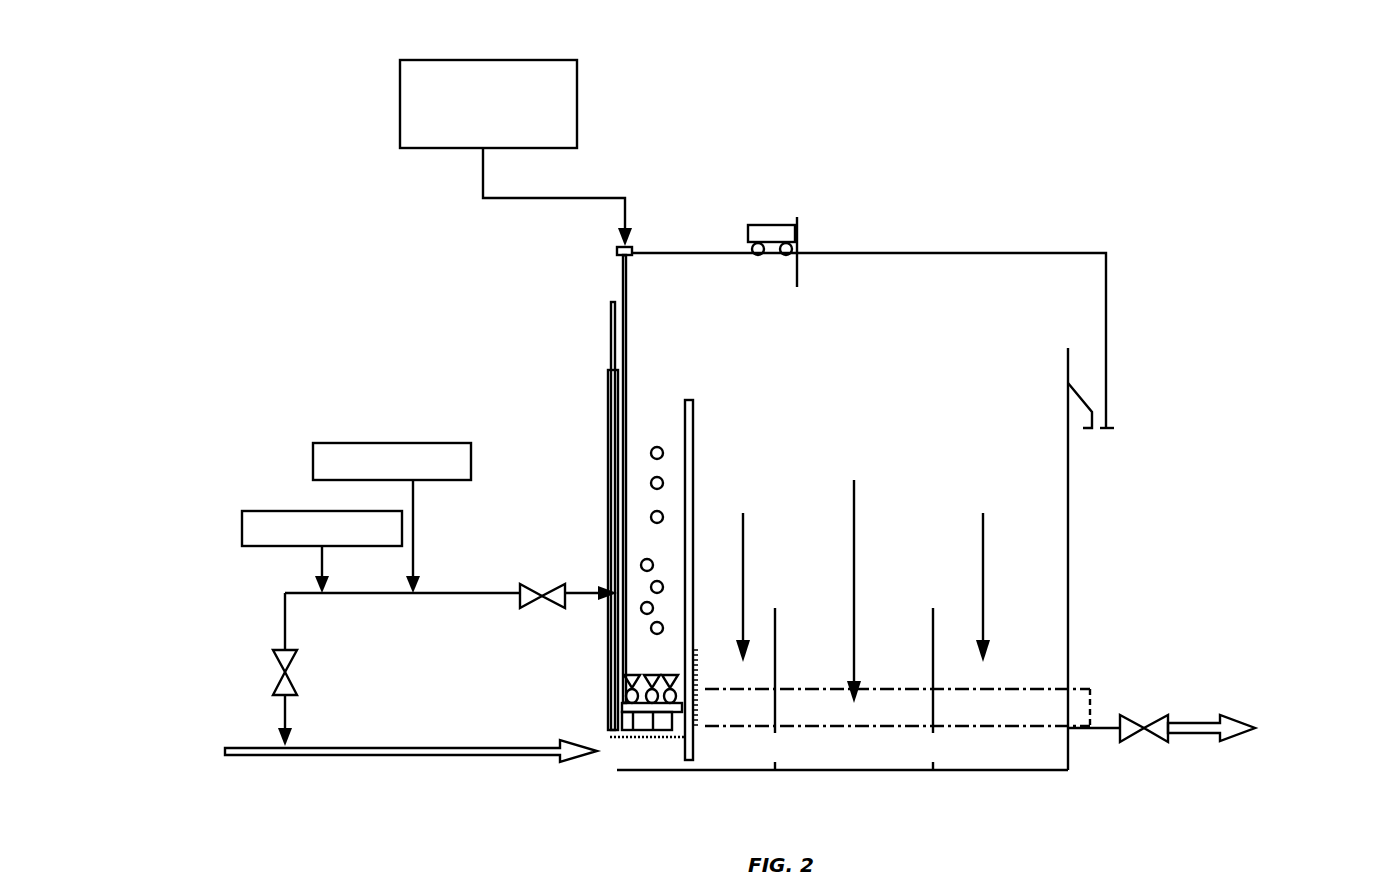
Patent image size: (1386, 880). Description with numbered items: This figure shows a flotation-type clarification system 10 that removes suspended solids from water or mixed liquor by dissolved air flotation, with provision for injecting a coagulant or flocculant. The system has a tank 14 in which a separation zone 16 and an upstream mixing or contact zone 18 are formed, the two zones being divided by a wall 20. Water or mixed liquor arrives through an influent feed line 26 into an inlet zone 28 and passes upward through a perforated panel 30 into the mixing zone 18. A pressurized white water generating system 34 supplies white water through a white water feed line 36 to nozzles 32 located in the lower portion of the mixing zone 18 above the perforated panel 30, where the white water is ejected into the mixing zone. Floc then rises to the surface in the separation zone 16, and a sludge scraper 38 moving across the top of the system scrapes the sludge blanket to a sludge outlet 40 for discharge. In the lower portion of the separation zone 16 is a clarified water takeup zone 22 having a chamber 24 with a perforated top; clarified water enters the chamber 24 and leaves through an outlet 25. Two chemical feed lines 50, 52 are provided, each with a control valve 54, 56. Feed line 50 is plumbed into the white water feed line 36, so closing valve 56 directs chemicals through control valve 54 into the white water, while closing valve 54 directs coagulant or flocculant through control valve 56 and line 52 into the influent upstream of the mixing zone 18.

The clarification system 10 is at (1160, 124).
The tank 14 is at (1122, 542).
The separation zone 16 is at (912, 423).
The mixing zone 18 is at (636, 434).
The wall 20 is at (688, 430).
The clarified water takeup zone 22 is at (1012, 772).
The chamber 24 is at (895, 713).
The outlet 25 is at (1104, 728).
The influent feed line 26 is at (297, 757).
The inlet zone 28 is at (631, 748).
The perforated panel 30 is at (655, 737).
The nozzles 32 is at (650, 681).
The white water generating system 34 is at (580, 78).
The white water feed line 36 is at (622, 522).
The sludge scraper 38 is at (786, 233).
The sludge outlet 40 is at (1096, 398).
The chemical feed line 50 is at (583, 593).
The chemical feed line 52 is at (285, 705).
The control valve 54 is at (528, 588).
The control valve 56 is at (273, 655).